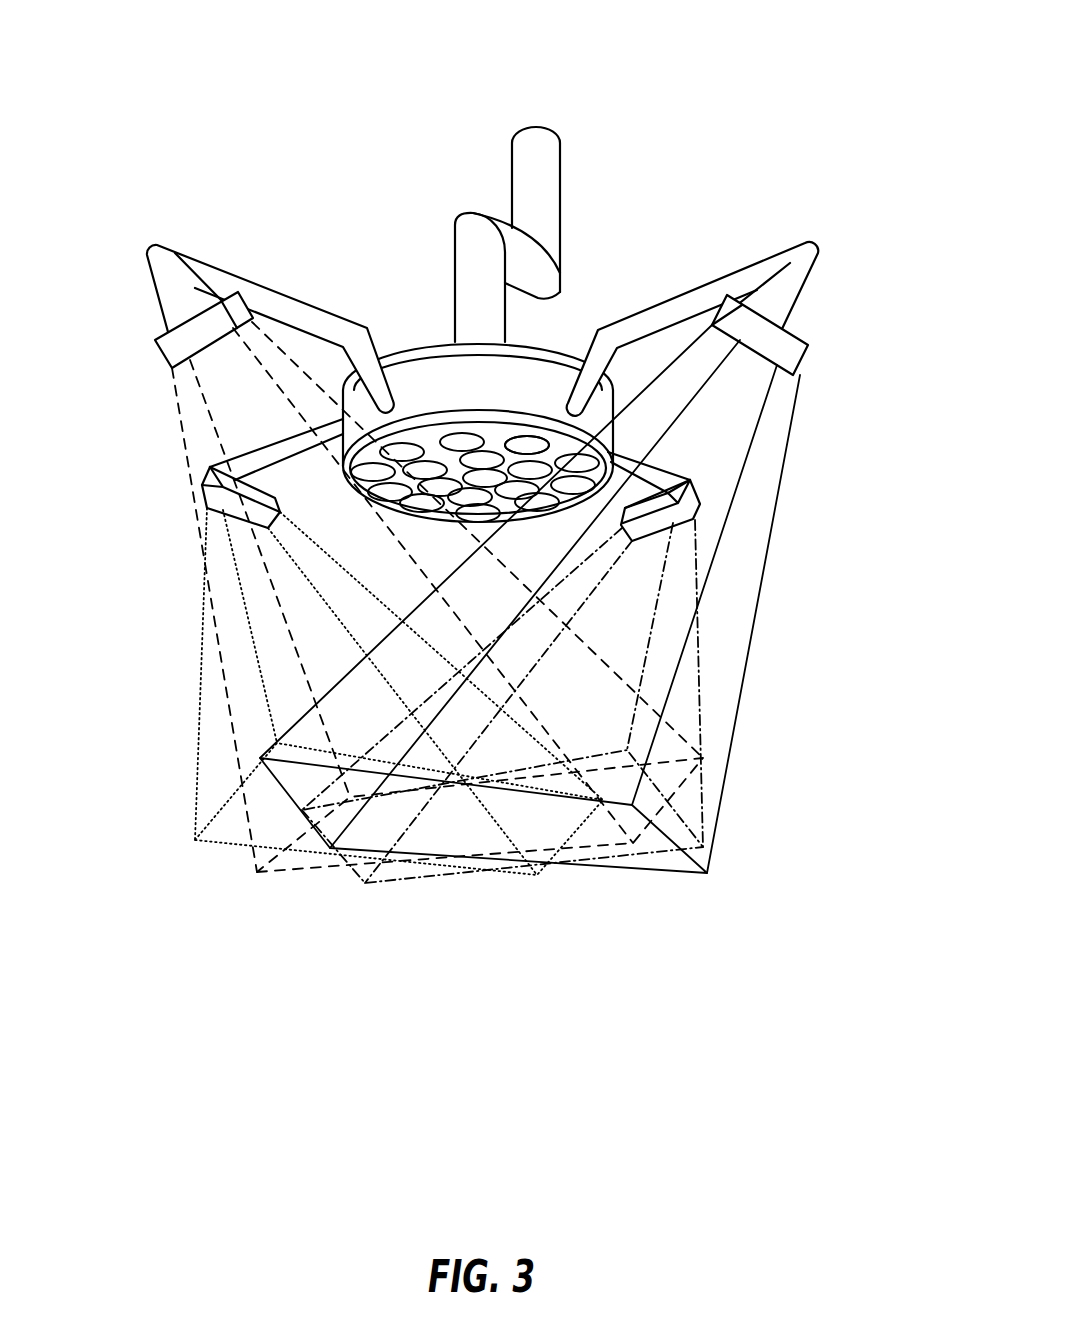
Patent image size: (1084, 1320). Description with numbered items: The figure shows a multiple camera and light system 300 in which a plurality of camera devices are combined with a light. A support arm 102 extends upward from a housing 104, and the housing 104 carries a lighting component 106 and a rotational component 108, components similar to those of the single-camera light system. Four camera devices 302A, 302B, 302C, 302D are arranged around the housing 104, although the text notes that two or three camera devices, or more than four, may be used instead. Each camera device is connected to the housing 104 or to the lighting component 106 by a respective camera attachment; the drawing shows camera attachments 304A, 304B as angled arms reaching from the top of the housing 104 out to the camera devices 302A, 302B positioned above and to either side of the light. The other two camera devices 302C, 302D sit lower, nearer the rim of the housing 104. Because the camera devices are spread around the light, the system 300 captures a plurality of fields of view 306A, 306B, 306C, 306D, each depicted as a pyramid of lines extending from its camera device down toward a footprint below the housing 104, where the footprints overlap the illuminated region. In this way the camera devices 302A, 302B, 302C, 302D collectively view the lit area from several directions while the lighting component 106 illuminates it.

The multiple camera and light system 300 is at (730, 32).
The support arm 102 is at (562, 186).
The housing 104 is at (430, 340).
The lighting component 106 is at (505, 445).
The rotational component 108 is at (459, 412).
The camera device 302A is at (170, 333).
The camera device 302B is at (808, 340).
The camera device 302C is at (205, 492).
The camera device 302D is at (700, 512).
The camera attachment 304A is at (182, 252).
The camera attachment 304B is at (818, 250).
The field of view 306A is at (188, 445).
The field of view 306B is at (775, 485).
The field of view 306C is at (200, 755).
The field of view 306D is at (703, 700).